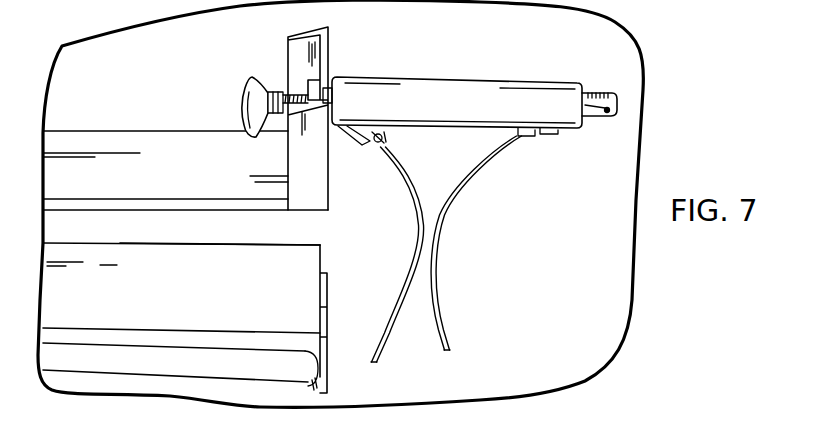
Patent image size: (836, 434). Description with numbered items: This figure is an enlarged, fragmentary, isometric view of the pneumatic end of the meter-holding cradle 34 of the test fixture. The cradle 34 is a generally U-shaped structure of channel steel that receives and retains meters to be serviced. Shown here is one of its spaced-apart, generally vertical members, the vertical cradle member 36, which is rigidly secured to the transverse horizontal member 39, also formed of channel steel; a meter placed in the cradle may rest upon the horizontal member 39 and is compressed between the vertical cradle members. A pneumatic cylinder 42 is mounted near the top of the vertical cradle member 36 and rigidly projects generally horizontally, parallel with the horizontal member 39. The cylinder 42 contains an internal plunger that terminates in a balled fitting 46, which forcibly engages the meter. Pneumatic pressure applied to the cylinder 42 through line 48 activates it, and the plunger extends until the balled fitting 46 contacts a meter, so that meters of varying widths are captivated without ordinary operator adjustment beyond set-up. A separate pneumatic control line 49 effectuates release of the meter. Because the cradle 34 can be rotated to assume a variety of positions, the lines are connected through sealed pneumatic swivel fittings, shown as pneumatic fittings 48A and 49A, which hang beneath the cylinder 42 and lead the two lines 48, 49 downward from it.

The cradle 34 is at (188, 147).
The vertical cradle member 36 is at (317, 60).
The transverse horizontal member 39 is at (200, 193).
The pneumatic cylinder 42 is at (503, 68).
The balled fitting 46 is at (247, 100).
The line 48 is at (448, 219).
The pneumatic control line 49 is at (420, 223).
The pneumatic fitting 48A is at (549, 133).
The pneumatic fitting 49A is at (380, 140).